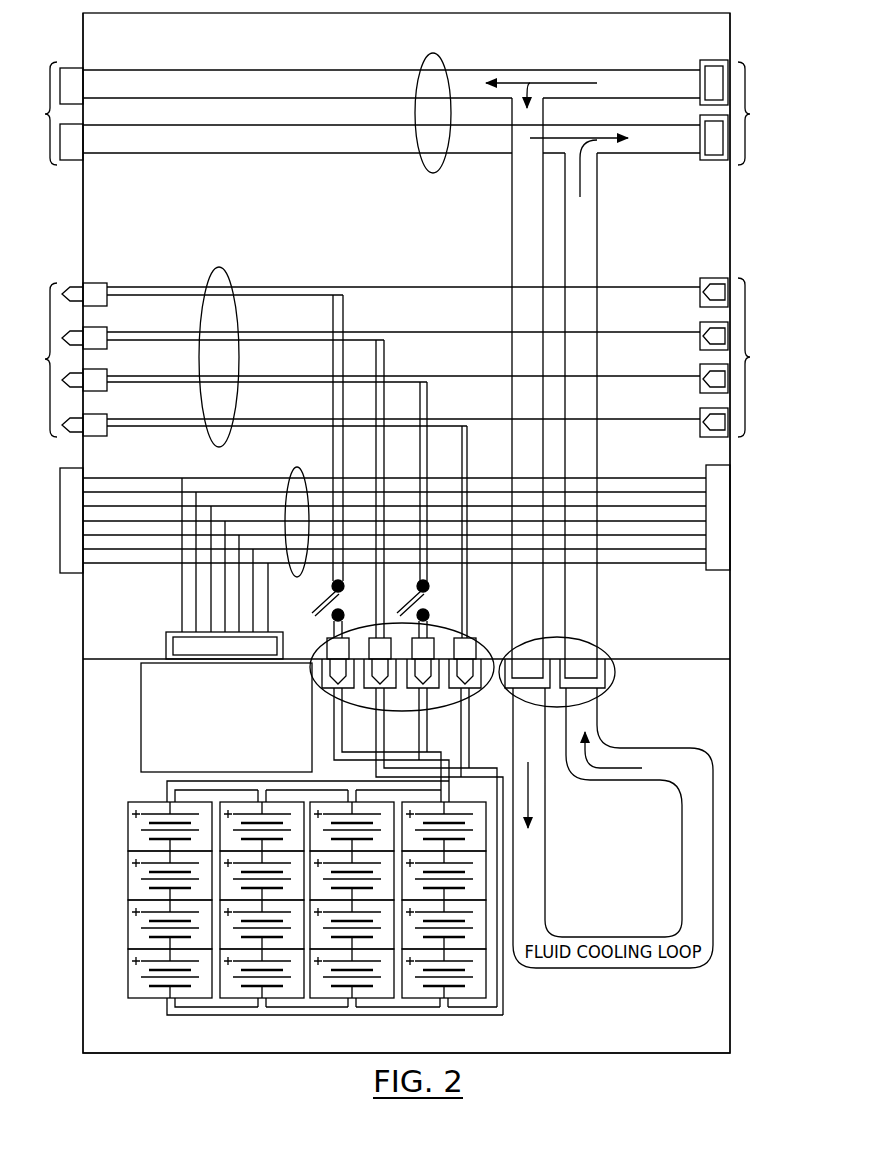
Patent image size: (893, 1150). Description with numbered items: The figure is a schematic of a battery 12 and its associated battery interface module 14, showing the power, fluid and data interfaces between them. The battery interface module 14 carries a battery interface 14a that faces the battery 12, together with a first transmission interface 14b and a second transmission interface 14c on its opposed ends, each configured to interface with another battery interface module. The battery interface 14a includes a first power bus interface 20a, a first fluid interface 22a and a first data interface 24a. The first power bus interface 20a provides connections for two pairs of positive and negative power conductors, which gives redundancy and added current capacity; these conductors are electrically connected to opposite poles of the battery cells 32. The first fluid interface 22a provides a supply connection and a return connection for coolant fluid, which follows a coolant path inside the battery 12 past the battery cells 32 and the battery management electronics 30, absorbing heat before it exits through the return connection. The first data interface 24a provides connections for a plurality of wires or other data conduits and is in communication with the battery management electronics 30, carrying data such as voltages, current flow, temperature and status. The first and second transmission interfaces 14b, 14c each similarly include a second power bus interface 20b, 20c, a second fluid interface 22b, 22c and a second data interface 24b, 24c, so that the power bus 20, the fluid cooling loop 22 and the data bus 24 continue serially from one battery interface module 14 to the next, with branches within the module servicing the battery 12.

The battery 12 is at (733, 727).
The battery interface module 14 is at (730, 229).
The battery interface 14a is at (677, 657).
The first transmission interface 14b is at (730, 40).
The second transmission interface 14c is at (82, 43).
The power bus 20 is at (229, 284).
The first power bus interface 20a is at (481, 645).
The second power bus interface 20b is at (742, 357).
The second power bus interface 20c is at (59, 360).
The fluid cooling loop 22 is at (418, 165).
The first fluid interface 22a is at (608, 653).
The second fluid interface 22b is at (742, 112).
The second fluid interface 22c is at (48, 113).
The data bus 24 is at (301, 470).
The first data interface 24a is at (185, 652).
The second data interface 24b is at (718, 522).
The second data interface 24c is at (60, 520).
The battery management electronics 30 is at (152, 750).
The battery cells 32 is at (128, 938).